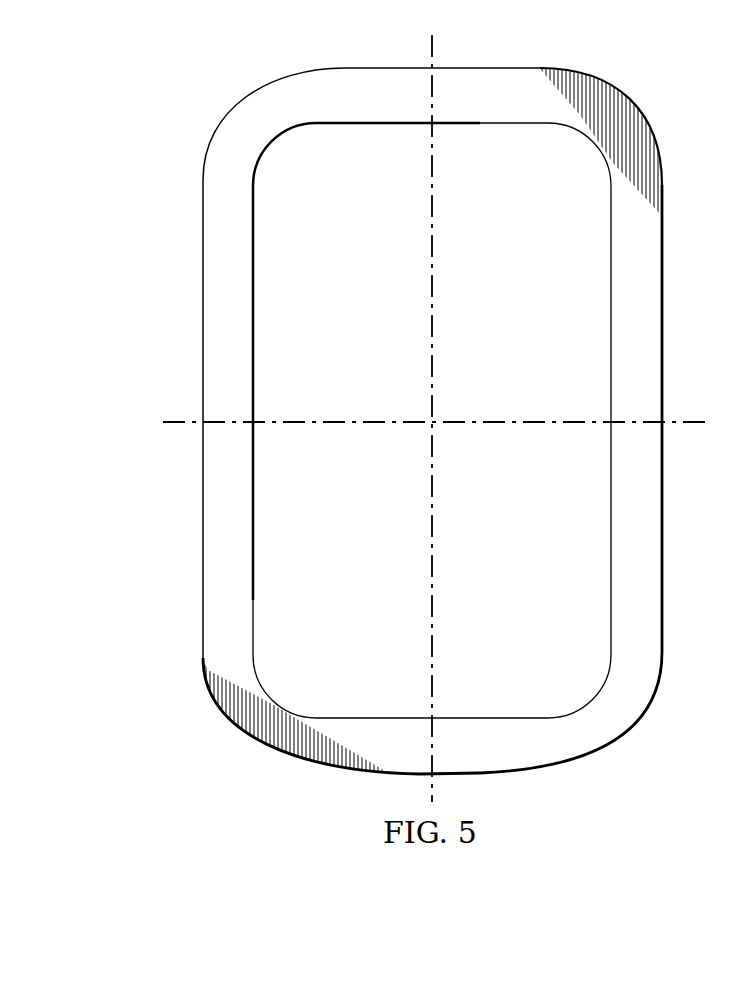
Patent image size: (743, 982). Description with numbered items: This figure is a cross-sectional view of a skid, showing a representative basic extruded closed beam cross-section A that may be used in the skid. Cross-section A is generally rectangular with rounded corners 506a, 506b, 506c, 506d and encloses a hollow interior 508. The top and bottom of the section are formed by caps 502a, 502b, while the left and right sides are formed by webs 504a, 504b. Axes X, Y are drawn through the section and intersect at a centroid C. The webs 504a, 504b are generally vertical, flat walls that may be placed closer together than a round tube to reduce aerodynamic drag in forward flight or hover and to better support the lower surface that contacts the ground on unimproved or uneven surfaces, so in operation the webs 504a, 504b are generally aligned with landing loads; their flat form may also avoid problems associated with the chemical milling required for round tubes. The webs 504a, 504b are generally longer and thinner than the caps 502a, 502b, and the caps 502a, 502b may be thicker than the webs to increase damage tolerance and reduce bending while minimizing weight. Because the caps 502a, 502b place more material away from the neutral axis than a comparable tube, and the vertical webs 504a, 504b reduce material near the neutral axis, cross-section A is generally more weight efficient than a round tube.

The cap 502a is at (333, 80).
The cap 502b is at (530, 763).
The web 504a is at (210, 285).
The web 504b is at (655, 557).
The rounded corner 506a is at (227, 113).
The rounded corner 506b is at (637, 112).
The rounded corner 506c is at (637, 728).
The rounded corner 506d is at (227, 727).
The hollow interior 508 is at (361, 288).
The cross-section A is at (203, 176).
The centroid C is at (427, 414).
The X axis X is at (493, 424).
The Y axis Y is at (433, 254).